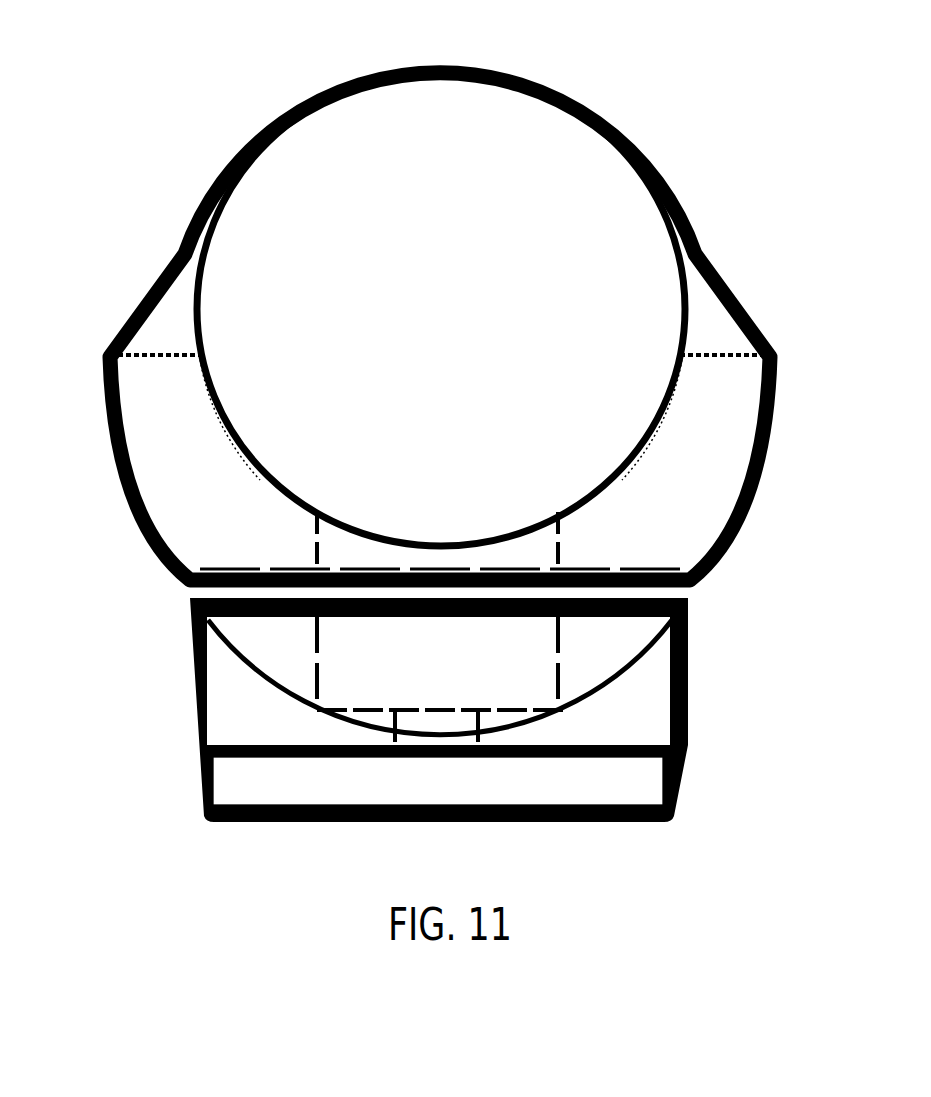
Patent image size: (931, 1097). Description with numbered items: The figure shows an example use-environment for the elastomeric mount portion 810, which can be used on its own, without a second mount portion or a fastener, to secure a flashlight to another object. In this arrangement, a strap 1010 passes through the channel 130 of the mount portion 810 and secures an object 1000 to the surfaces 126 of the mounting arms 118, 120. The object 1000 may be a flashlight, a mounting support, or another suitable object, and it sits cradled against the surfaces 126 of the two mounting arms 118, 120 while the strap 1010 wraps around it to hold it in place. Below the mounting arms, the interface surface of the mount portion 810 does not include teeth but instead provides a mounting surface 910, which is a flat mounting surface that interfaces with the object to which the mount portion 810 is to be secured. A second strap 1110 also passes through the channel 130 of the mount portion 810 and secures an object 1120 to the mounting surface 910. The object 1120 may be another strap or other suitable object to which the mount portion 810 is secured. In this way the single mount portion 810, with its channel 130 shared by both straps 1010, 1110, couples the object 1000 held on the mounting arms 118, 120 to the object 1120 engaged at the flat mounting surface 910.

The object 1000 is at (463, 309).
The strap 1010 is at (448, 72).
The mounting arm 118 is at (140, 383).
The mounting arm 120 is at (740, 381).
The surfaces 126 is at (222, 423).
The channel 130 is at (644, 593).
The strap 1110 is at (628, 605).
The mount portion 810 is at (647, 707).
The mounting surface 910 is at (628, 747).
The object 1120 is at (475, 796).